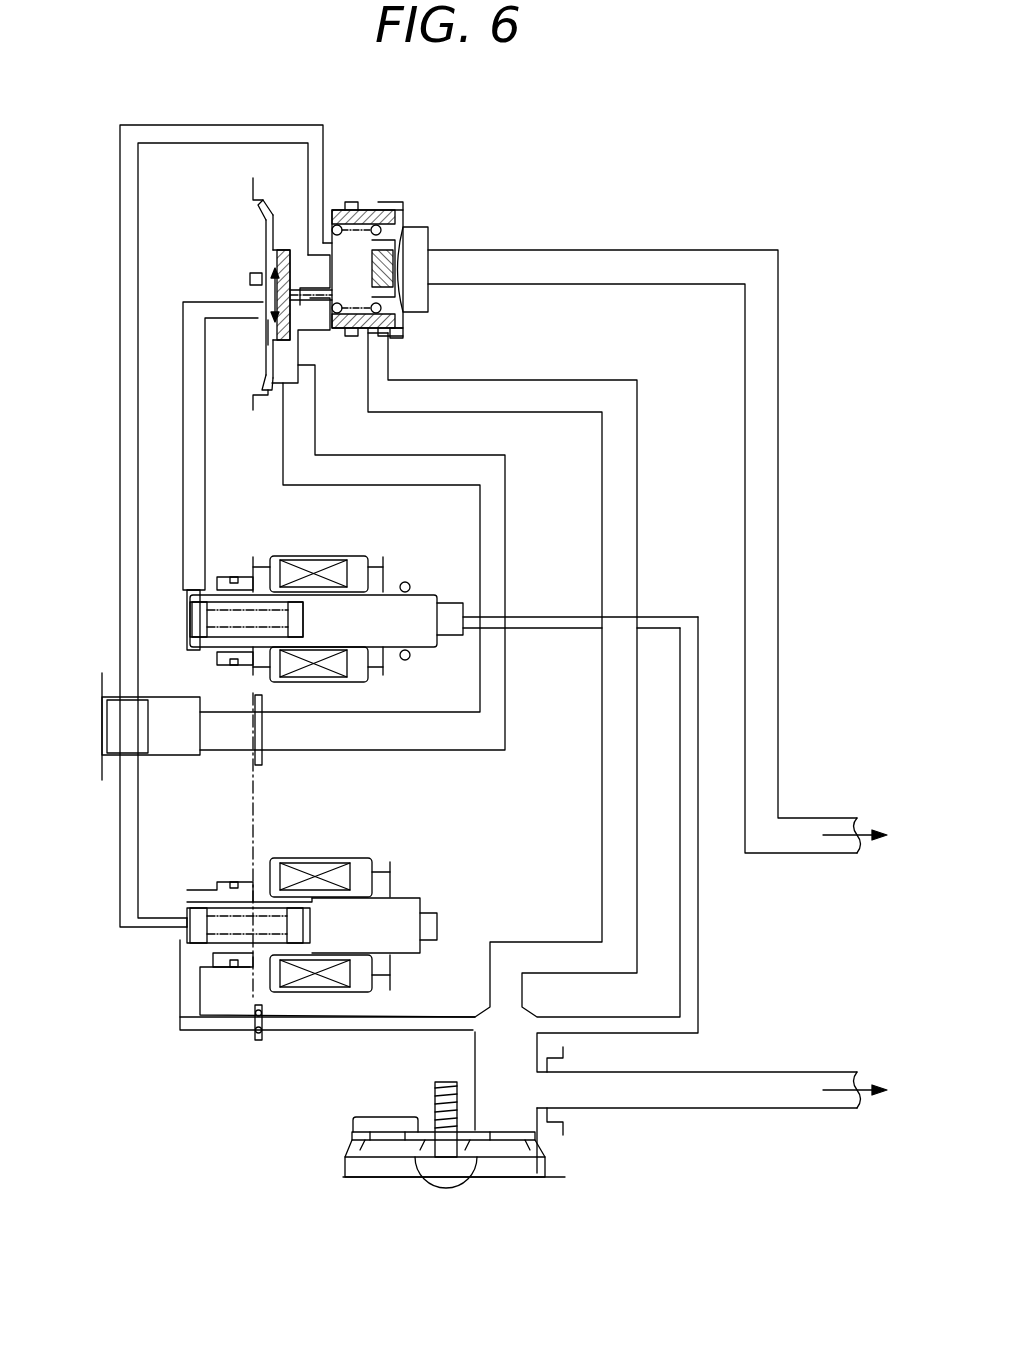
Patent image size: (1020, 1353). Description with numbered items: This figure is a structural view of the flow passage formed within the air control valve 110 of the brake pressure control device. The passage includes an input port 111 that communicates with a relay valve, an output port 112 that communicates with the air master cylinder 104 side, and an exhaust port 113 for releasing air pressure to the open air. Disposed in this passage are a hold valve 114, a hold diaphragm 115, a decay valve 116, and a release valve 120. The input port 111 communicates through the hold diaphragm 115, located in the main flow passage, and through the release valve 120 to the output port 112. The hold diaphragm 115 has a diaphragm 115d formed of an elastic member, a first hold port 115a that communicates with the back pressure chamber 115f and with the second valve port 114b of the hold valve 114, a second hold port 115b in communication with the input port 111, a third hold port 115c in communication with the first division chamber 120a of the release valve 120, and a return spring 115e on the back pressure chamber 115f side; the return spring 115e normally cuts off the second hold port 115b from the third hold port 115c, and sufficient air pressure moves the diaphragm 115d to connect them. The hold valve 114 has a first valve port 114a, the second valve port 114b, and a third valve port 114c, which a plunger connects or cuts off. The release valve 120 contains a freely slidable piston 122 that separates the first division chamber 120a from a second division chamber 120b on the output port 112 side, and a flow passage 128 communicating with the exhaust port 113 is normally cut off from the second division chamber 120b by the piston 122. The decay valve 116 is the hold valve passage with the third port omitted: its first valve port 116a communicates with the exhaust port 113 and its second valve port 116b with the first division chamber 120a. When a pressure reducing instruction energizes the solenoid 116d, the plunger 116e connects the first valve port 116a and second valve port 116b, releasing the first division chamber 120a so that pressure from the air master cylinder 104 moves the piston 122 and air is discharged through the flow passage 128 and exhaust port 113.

The air master cylinder 104 is at (880, 963).
The air control valve 110 is at (751, 243).
The input port 111 is at (110, 733).
The output port 112 is at (800, 822).
The exhaust port 113 is at (477, 1057).
The hold valve 114 is at (372, 589).
The first valve port 114a is at (177, 618).
The second valve port 114b is at (190, 497).
The third valve port 114c is at (418, 612).
The hold diaphragm 115 is at (208, 313).
The first hold port 115a is at (200, 315).
The second hold port 115b is at (297, 397).
The third hold port 115c is at (310, 303).
The diaphragm 115d is at (268, 268).
The return spring 115e is at (258, 278).
The back pressure chamber 115f is at (262, 322).
The decay valve 116 is at (288, 927).
The first valve port 116a is at (190, 982).
The second valve port 116b is at (158, 920).
The solenoid 116d is at (320, 987).
The plunger 116e is at (247, 950).
The release valve 120 is at (436, 221).
The first division chamber 120a is at (360, 245).
The second division chamber 120b is at (428, 240).
The piston 122 is at (407, 332).
The flow passage 128 is at (385, 352).